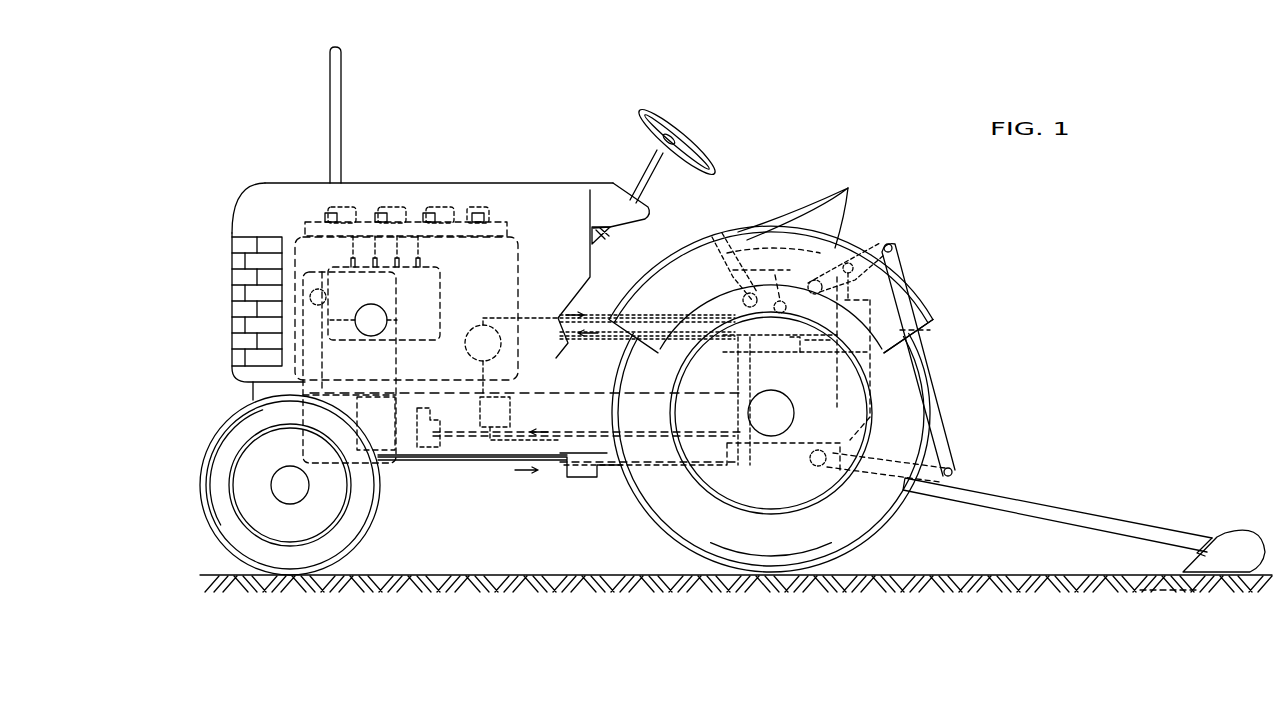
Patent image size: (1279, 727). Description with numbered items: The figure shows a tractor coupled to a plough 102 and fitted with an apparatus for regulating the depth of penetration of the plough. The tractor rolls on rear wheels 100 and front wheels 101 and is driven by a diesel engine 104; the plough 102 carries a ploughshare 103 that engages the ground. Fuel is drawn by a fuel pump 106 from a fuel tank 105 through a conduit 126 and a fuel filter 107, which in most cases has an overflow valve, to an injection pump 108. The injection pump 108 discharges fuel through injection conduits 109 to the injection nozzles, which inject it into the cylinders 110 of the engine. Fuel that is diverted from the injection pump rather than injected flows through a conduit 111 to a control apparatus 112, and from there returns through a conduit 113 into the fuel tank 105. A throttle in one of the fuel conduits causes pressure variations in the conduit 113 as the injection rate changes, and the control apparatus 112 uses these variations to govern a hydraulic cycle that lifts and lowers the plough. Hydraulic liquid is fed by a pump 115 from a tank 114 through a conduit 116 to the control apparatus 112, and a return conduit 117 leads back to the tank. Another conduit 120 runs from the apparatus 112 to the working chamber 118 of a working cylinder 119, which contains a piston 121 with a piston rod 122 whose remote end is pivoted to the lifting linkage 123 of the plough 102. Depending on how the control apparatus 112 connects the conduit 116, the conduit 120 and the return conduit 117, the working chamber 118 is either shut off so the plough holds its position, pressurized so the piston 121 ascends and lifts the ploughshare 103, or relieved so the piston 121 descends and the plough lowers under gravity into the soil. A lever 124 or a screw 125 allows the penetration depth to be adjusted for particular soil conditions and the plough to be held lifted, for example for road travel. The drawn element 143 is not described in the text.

The rear wheels 100 is at (673, 518).
The front wheels 101 is at (347, 535).
The plough 102 is at (1082, 502).
The ploughshare 103 is at (1198, 591).
The diesel engine 104 is at (498, 280).
The fuel tank 105 is at (410, 438).
The fuel pump 106 is at (384, 329).
The fuel filter 107 is at (326, 296).
The injection pump 108 is at (428, 299).
The injection conduits 109 is at (413, 208).
The cylinders 110 is at (509, 226).
The conduit 111 is at (559, 463).
The control apparatus 112 is at (775, 340).
The conduit 113 is at (572, 433).
The tank 114 is at (497, 423).
The pump 115 is at (495, 352).
The conduit 116 is at (534, 320).
The return conduit 117 is at (563, 347).
The working chamber 118 is at (846, 372).
The working cylinder 119 is at (902, 351).
The conduit 120 is at (816, 346).
The piston 121 is at (905, 331).
The piston rod 122 is at (850, 291).
The lifting linkage 123 is at (884, 247).
The lever 124 is at (728, 268).
The screw 125 is at (770, 285).
The conduit 126 is at (322, 277).
The ignition coils 143 is at (475, 210).